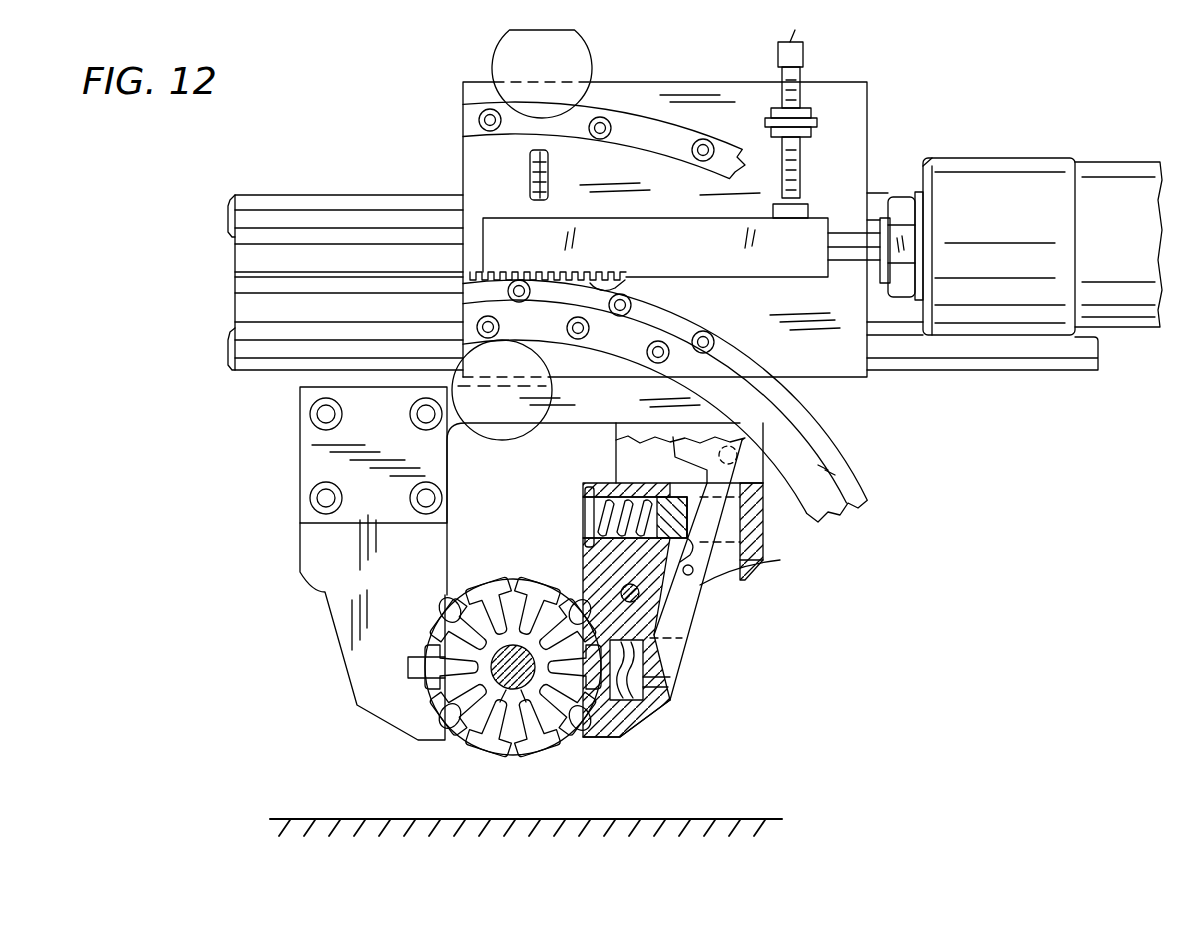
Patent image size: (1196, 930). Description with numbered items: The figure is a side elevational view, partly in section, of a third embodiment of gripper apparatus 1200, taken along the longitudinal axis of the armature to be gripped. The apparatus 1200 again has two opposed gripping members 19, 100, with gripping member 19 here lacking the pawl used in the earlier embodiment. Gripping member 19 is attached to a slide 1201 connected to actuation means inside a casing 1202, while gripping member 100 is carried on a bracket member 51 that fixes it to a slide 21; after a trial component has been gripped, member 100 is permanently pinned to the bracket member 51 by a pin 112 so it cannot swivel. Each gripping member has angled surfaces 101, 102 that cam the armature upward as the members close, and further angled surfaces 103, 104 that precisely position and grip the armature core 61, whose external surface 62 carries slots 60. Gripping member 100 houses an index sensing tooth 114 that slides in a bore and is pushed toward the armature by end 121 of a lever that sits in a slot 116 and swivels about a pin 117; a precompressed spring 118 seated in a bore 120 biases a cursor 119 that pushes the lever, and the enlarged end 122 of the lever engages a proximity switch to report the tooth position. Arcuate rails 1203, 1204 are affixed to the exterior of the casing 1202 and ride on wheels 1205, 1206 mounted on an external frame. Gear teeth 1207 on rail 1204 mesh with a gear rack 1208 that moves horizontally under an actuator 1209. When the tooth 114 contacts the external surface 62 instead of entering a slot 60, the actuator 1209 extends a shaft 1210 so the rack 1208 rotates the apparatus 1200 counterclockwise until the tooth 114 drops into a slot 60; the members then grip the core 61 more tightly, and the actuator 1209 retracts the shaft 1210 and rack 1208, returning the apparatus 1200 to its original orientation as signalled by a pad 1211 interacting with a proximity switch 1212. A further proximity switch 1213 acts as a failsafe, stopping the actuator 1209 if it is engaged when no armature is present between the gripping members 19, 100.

The gripper apparatus 1200 is at (1085, 480).
The slide 1201 is at (328, 462).
The casing 1202 is at (858, 113).
The arcuate rail 1203 is at (670, 135).
The arcuate rail 1204 is at (853, 493).
The wheel 1205 is at (578, 63).
The wheel 1206 is at (543, 404).
The gear teeth 1207 is at (607, 280).
The gear rack 1208 is at (628, 220).
The actuator 1209 is at (1020, 188).
The shaft 1210 is at (850, 265).
The pad 1211 is at (815, 210).
The proximity switch 1212 is at (800, 160).
The proximity switch 1213 is at (532, 183).
The gripping member 19 is at (360, 703).
The slide 21 is at (622, 447).
The bracket member 51 is at (763, 553).
The slot 60 is at (556, 745).
The armature core 61 is at (490, 750).
The external surface 62 is at (537, 753).
The gripping member 100 is at (677, 650).
The angled surface 101 is at (458, 738).
The angled surface 102 is at (573, 723).
The angled surface 103 is at (452, 604).
The angled surface 104 is at (582, 595).
The pin 112 is at (667, 618).
The index sensing tooth 114 is at (628, 710).
The slot 116 is at (703, 580).
The pin 117 is at (698, 595).
The precompressed spring 118 is at (598, 484).
The cursor 119 is at (675, 508).
The bore 120 is at (587, 520).
The end of lever 121 is at (670, 680).
The enlarged end of lever 122 is at (686, 452).